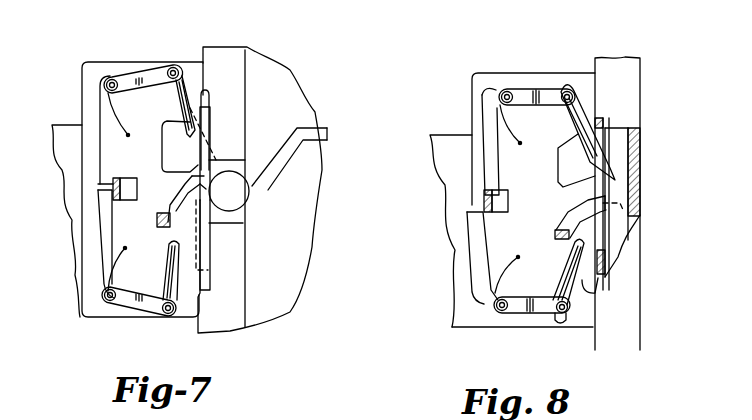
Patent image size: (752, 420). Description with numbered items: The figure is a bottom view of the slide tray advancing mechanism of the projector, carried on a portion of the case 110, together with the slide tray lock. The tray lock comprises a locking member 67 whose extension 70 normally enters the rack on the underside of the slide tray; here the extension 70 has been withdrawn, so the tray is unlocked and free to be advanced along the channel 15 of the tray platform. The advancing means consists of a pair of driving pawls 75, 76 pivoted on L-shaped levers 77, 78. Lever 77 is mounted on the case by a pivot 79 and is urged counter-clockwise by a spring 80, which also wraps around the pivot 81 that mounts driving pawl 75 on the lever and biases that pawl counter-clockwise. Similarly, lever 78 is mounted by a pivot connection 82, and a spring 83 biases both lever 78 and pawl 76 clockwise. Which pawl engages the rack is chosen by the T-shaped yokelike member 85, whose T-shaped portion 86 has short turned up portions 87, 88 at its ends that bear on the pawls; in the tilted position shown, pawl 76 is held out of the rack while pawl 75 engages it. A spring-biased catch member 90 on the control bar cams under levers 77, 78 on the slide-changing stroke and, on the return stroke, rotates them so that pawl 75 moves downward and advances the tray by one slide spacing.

In FIG. 8, the channel 15 is at (623, 233).
In FIG. 7, the locking member 67 is at (156, 224).
In FIG. 8, the locking member 67 is at (560, 243).
In FIG. 7, the extension of the locking member 70 is at (180, 188).
In FIG. 8, the extension of the locking member 70 is at (588, 194).
In FIG. 7, the driving pawl 75 is at (179, 173).
In FIG. 8, the driving pawl 75 is at (573, 119).
In FIG. 7, the driving pawl 76 is at (168, 264).
In FIG. 8, the driving pawl 76 is at (567, 270).
In FIG. 7, the L-shaped lever 77 is at (102, 154).
In FIG. 8, the L-shaped lever 77 is at (478, 158).
In FIG. 7, the L-shaped member 78 is at (98, 233).
In FIG. 8, the L-shaped member 78 is at (486, 248).
In FIG. 7, the pivot 79 is at (111, 79).
In FIG. 7, the spring 80 is at (127, 115).
In FIG. 7, the pivot 81 is at (173, 67).
In FIG. 7, the pivot connection 82 is at (112, 301).
In FIG. 7, the spring 83 is at (121, 258).
In FIG. 7, the T-shaped yokelike member 85 is at (277, 157).
In FIG. 7, the T-shaped portion 86 is at (198, 177).
In FIG. 7, the turned up portion 87 is at (208, 96).
In FIG. 8, the turned up portion 87 is at (600, 117).
In FIG. 7, the turned up portion 88 is at (203, 282).
In FIG. 8, the turned up portion 88 is at (598, 290).
In FIG. 7, the catch member 90 is at (130, 178).
In FIG. 8, the catch member 90 is at (500, 190).
In FIG. 7, the portion of the case 110 is at (83, 96).
In FIG. 8, the portion of the case 110 is at (478, 96).